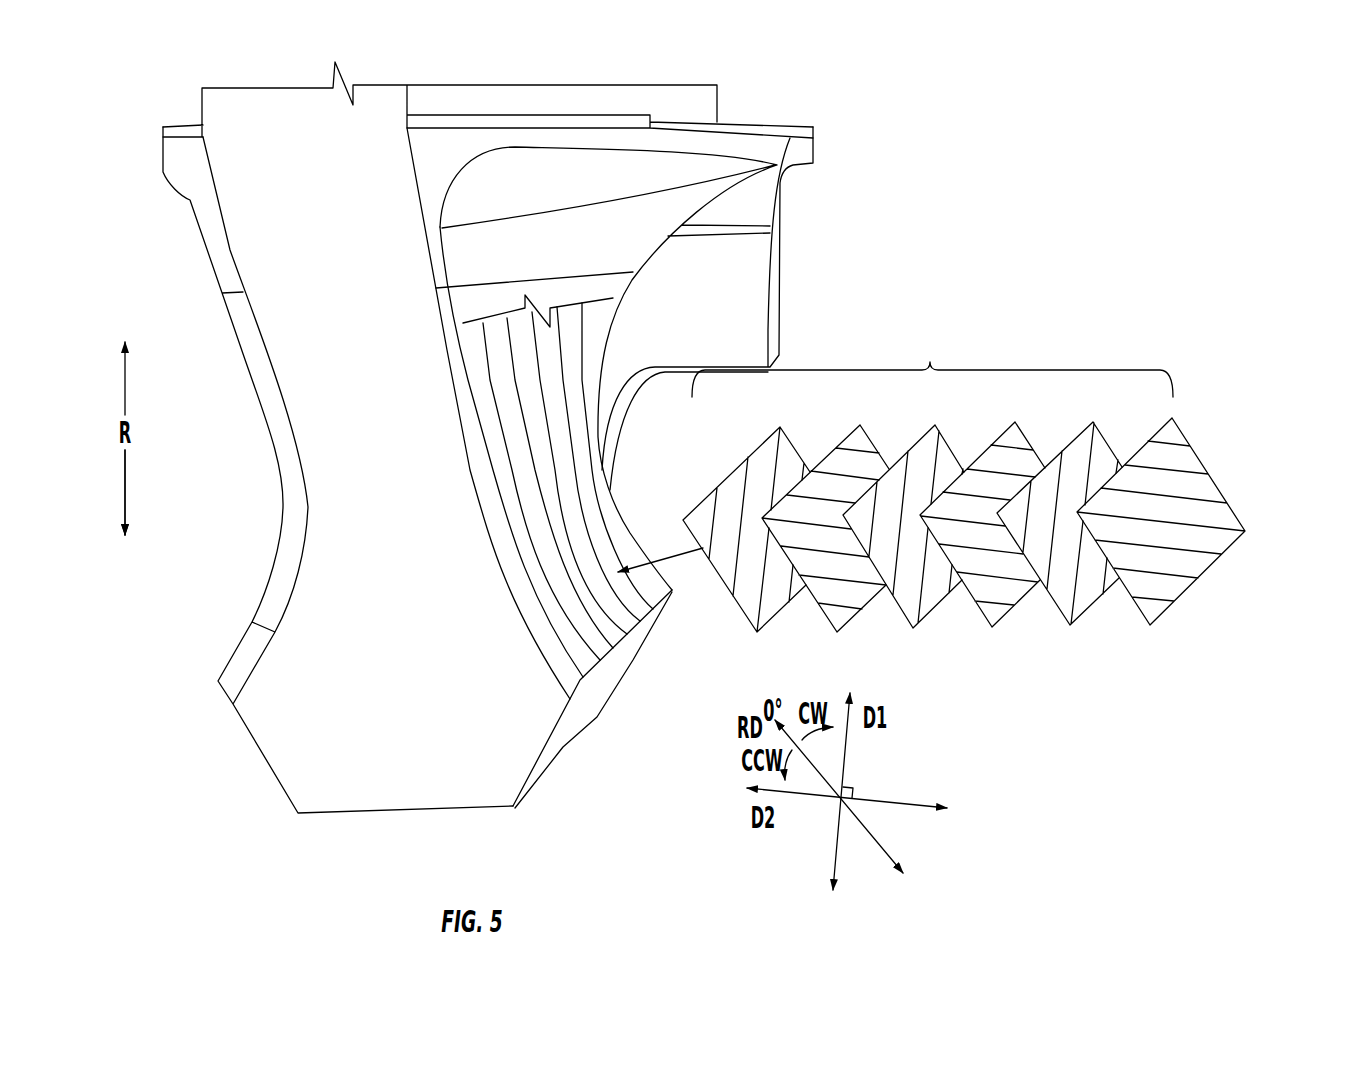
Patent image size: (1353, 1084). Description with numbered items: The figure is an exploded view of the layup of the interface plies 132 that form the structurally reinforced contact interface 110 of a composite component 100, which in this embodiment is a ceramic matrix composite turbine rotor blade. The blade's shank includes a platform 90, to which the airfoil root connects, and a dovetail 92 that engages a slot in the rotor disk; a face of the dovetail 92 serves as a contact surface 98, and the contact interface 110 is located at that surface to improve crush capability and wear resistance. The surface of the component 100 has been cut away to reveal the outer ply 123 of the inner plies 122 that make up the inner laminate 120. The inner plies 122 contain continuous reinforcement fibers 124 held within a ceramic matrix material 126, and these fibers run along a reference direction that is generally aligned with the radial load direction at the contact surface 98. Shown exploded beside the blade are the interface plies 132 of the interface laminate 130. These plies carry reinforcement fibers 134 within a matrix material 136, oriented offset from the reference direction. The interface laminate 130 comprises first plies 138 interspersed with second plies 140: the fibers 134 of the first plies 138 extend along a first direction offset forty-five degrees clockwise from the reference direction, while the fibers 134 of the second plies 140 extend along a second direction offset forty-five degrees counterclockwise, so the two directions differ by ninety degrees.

The platform 90 is at (753, 147).
The dovetail 92 is at (298, 712).
The contact surface 98 is at (582, 635).
The component 100 is at (872, 210).
The structurally reinforced contact interface 110 is at (1107, 297).
The inner laminate 120 is at (488, 462).
The inner plies 122 is at (472, 390).
The outer ply 123 is at (535, 517).
The reinforcement fibers 124 is at (590, 505).
The matrix material 126 is at (580, 463).
The interface laminate 130 is at (962, 637).
The interface plies 132 is at (930, 362).
The reinforcement fibers 134 is at (1167, 575).
The matrix material 136 is at (1200, 535).
The first plies 138 is at (735, 462).
The second plies 140 is at (825, 445).